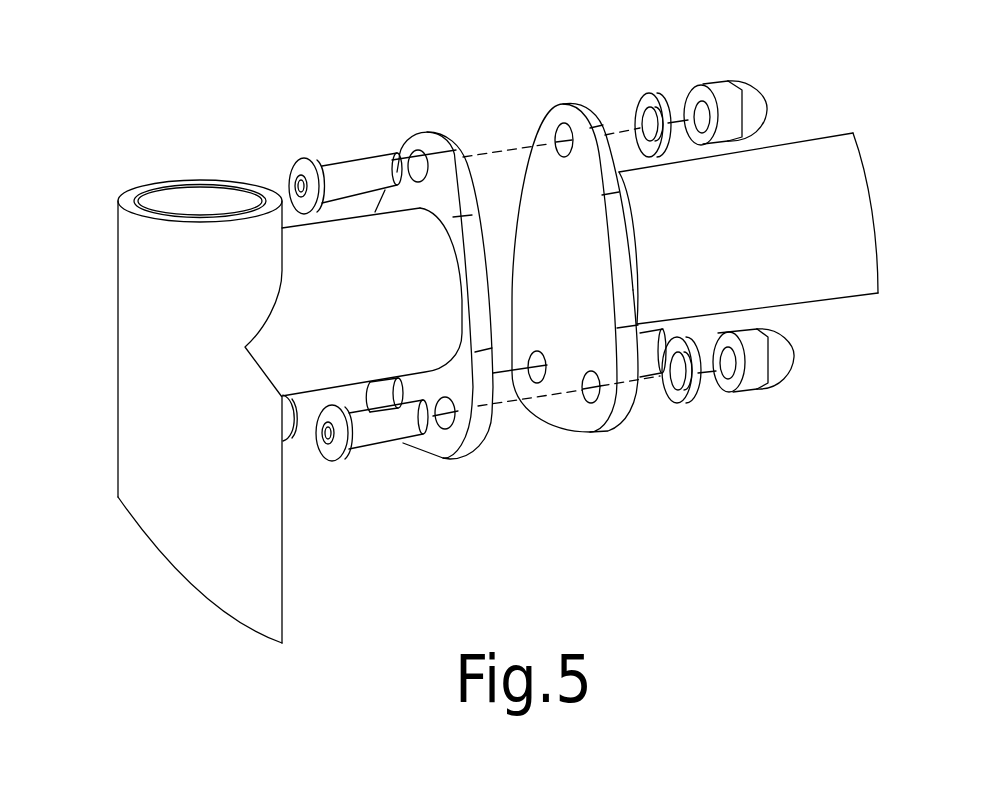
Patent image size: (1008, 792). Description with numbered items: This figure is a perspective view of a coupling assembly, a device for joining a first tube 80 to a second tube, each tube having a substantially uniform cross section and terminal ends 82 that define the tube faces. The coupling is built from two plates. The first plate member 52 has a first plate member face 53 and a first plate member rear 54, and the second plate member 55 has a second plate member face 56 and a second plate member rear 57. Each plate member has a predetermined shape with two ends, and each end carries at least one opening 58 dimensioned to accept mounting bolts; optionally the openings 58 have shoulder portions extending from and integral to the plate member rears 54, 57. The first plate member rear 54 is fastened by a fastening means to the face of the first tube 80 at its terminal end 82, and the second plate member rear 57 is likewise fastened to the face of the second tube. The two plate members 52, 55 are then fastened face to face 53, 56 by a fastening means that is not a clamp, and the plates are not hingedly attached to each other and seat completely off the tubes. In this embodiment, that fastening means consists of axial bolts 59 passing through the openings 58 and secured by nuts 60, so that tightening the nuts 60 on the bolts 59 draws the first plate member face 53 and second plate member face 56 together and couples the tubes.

The first plate member 52 is at (411, 243).
The first plate member face 53 is at (457, 163).
The first plate member rear 54 is at (422, 197).
The second plate member 55 is at (624, 404).
The second plate member face 56 is at (604, 274).
The second plate member rear 57 is at (604, 137).
The opening 58 is at (563, 124).
The axial bolts 59 is at (330, 160).
The nuts 60 is at (780, 372).
The first tube 80 is at (325, 300).
The terminal ends 82 is at (462, 297).